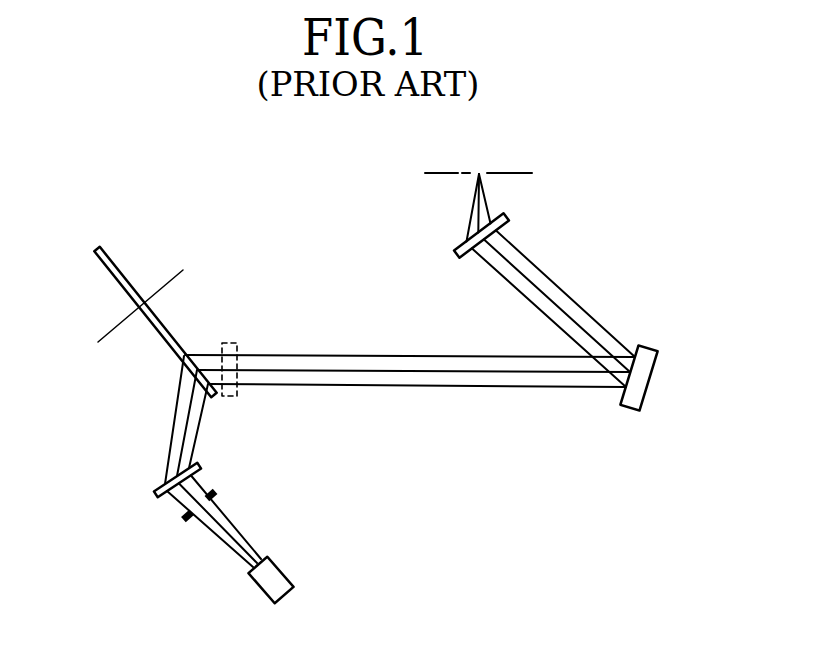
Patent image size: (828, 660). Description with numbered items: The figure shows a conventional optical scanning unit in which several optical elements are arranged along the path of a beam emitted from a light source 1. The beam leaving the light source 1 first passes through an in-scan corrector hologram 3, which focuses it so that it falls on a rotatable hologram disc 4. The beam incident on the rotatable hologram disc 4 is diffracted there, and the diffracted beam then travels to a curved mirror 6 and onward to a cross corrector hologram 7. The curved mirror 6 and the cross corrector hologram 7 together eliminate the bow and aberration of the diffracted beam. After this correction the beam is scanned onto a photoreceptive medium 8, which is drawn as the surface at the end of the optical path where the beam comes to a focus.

The light source 1 is at (277, 580).
The in-scan corrector hologram 3 is at (202, 467).
The rotatable hologram disc 4 is at (107, 260).
The curved mirror 6 is at (643, 354).
The cross corrector hologram 7 is at (505, 217).
The photoreceptive medium 8 is at (517, 173).